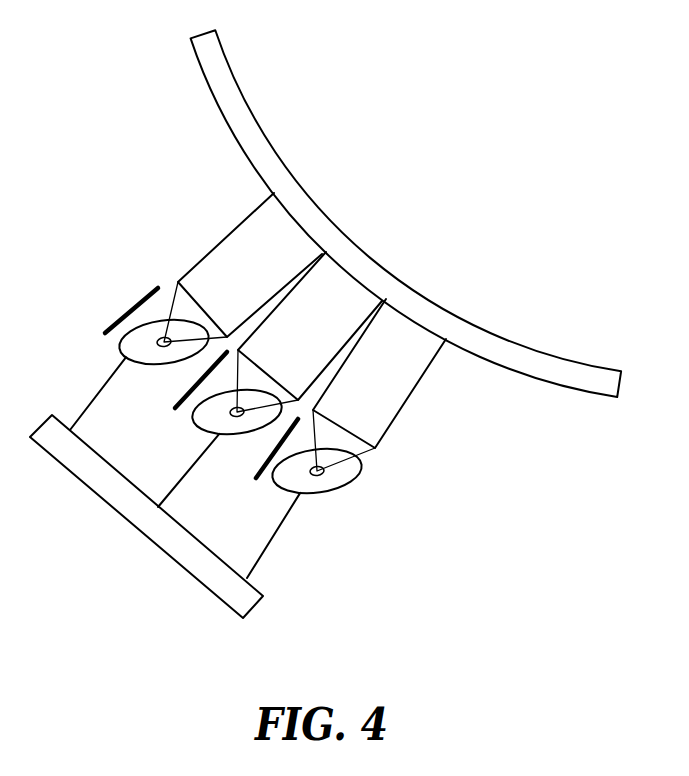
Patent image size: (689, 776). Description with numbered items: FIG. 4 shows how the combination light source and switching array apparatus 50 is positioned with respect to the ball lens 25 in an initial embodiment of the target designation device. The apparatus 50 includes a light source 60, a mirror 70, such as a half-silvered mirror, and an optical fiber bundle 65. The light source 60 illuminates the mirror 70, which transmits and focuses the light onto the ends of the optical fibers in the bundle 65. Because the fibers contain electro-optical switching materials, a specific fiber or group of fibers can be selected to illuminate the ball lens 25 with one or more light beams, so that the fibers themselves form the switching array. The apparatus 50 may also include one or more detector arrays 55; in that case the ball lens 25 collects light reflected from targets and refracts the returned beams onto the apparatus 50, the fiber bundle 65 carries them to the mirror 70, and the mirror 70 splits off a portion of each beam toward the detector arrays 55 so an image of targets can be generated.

The ball lens 25 is at (232, 70).
The combination light source and switching array apparatus 50 is at (385, 412).
The detector array 55 is at (115, 322).
The light source 60 is at (97, 483).
The optical fiber bundle 65 is at (232, 253).
The mirror 70 is at (128, 350).